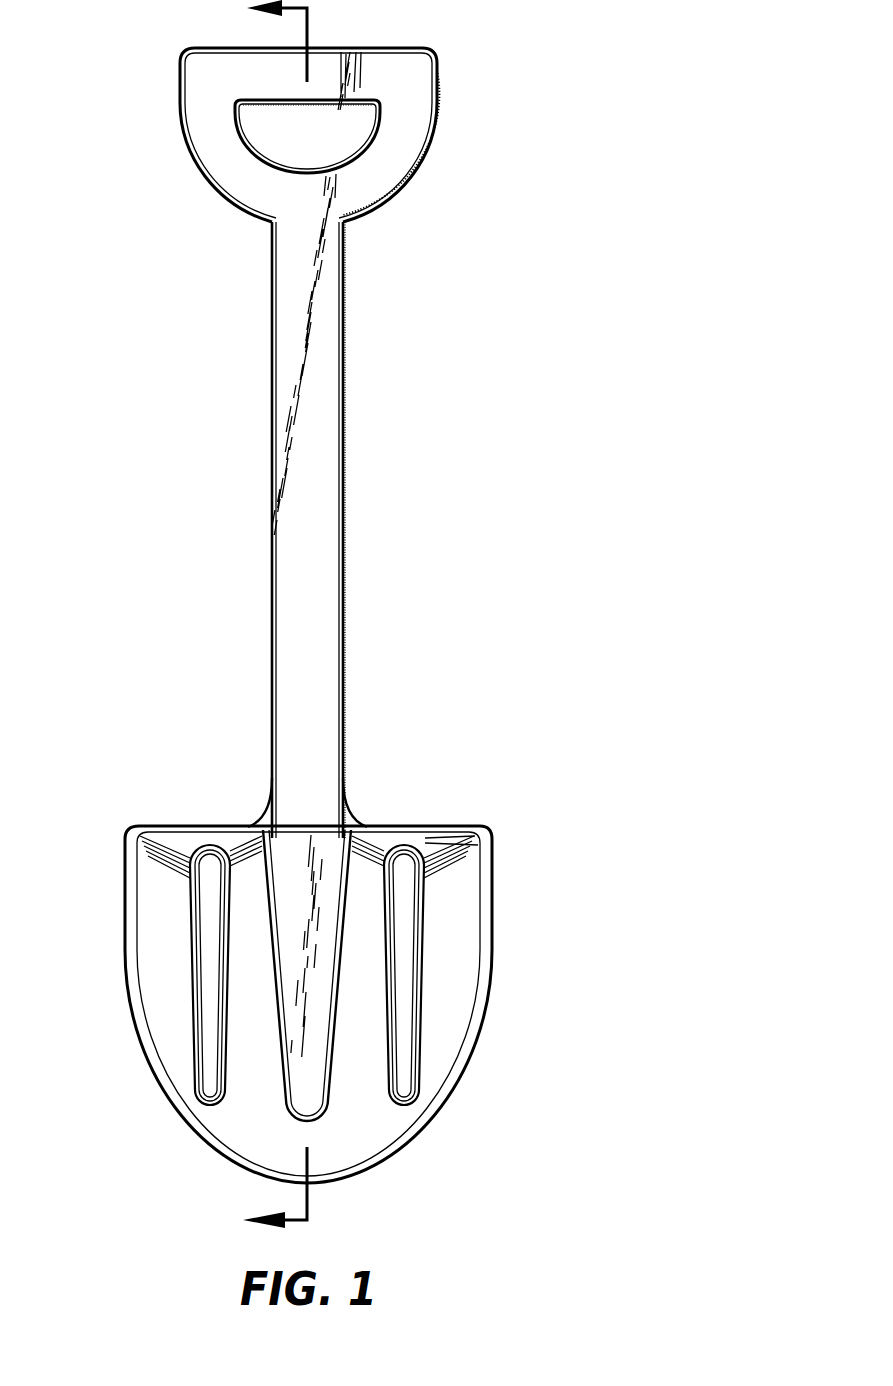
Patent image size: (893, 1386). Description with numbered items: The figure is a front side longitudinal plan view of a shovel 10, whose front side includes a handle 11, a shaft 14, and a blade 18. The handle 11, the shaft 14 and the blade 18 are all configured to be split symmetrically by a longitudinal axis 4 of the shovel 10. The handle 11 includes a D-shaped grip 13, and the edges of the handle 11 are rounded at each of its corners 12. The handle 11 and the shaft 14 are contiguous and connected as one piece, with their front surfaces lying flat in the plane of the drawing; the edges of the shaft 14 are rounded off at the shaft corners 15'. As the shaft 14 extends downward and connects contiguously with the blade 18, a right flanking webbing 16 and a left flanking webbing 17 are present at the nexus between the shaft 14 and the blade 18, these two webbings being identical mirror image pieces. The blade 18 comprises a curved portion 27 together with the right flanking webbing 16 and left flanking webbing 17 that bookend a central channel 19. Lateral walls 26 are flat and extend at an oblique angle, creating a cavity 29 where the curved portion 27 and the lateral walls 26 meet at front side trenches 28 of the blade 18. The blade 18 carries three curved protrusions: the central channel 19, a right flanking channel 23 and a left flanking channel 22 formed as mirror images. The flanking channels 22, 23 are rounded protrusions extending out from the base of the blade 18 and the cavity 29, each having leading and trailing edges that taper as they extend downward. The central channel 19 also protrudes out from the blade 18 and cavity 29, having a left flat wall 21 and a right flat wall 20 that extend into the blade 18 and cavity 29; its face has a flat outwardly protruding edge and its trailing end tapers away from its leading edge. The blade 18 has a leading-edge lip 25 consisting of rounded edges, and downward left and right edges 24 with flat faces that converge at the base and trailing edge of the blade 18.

The longitudinal axis 4 is at (266, 618).
The shovel 10 is at (493, 392).
The handle 11 is at (191, 93).
The corners 12 is at (440, 143).
The D-shaped grip 13 is at (266, 163).
The shaft 14 is at (281, 360).
The shaft side surface 15' is at (343, 506).
The right flanking webbing 16 is at (362, 814).
The left flanking webbing 17 is at (261, 816).
The blade 18 is at (161, 945).
The central channel 19 is at (305, 1090).
The right flat wall 20 is at (345, 912).
The left flat wall 21 is at (270, 912).
The left flanking channel 22 is at (210, 1018).
The right flanking channel 23 is at (403, 1018).
The left and right edges 24 is at (485, 887).
The leading-edge lip 25 is at (437, 829).
The lateral walls 26 is at (378, 838).
The curved portion 27 is at (365, 1138).
The front side trenches 28 is at (148, 834).
The cavity 29 is at (355, 1110).